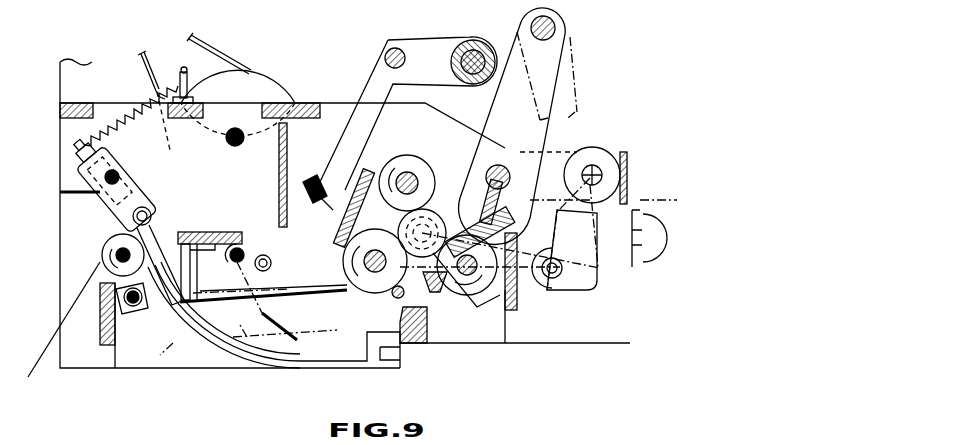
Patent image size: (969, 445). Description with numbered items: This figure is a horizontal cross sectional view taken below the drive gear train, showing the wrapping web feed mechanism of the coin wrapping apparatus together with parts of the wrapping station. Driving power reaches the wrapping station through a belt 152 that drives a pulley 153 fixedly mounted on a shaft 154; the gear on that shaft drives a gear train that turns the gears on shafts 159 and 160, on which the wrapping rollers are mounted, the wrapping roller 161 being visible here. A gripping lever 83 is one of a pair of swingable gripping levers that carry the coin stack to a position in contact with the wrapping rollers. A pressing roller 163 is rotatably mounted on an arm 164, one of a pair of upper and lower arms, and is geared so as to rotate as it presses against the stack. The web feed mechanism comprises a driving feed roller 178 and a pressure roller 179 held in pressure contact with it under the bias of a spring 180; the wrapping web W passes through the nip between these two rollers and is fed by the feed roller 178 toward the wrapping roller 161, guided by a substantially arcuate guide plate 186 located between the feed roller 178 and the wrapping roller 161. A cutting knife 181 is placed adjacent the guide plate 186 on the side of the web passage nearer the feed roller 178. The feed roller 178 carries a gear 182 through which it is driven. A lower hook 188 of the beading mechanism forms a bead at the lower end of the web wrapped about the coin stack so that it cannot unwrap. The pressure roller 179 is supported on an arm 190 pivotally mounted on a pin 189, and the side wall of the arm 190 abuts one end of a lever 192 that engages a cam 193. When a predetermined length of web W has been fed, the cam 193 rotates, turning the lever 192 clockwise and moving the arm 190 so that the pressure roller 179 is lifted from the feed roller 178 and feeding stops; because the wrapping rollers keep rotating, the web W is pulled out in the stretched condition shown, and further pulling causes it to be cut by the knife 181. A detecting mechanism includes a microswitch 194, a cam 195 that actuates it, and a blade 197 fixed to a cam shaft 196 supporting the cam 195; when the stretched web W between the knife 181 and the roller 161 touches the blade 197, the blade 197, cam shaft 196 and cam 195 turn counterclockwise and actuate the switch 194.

The gripping lever 83 is at (518, 127).
The belt 152 is at (232, 57).
The pulley 153 is at (272, 96).
The shaft 154 is at (237, 146).
The shaft 159 is at (392, 292).
The shaft 160 is at (409, 172).
The wrapping roller 161 is at (352, 266).
The pressing roller 163 is at (497, 290).
The arm 164 is at (505, 243).
The driving feed roller 178 is at (104, 249).
The pressure roller 179 is at (164, 224).
The spring 180 is at (133, 103).
The cutting knife 181 is at (200, 302).
The gear 182 is at (433, 163).
The arcuate guide plate 186 is at (292, 370).
The lower hook 188 is at (350, 223).
The pin 189 is at (110, 133).
The arm 190 is at (135, 186).
The lever 192 is at (173, 343).
The cam 193 is at (118, 322).
The microswitch 194 is at (247, 337).
The cam 195 is at (267, 262).
The cam shaft 196 is at (246, 253).
The blade 197 is at (290, 306).
The wrapping web W is at (60, 289).